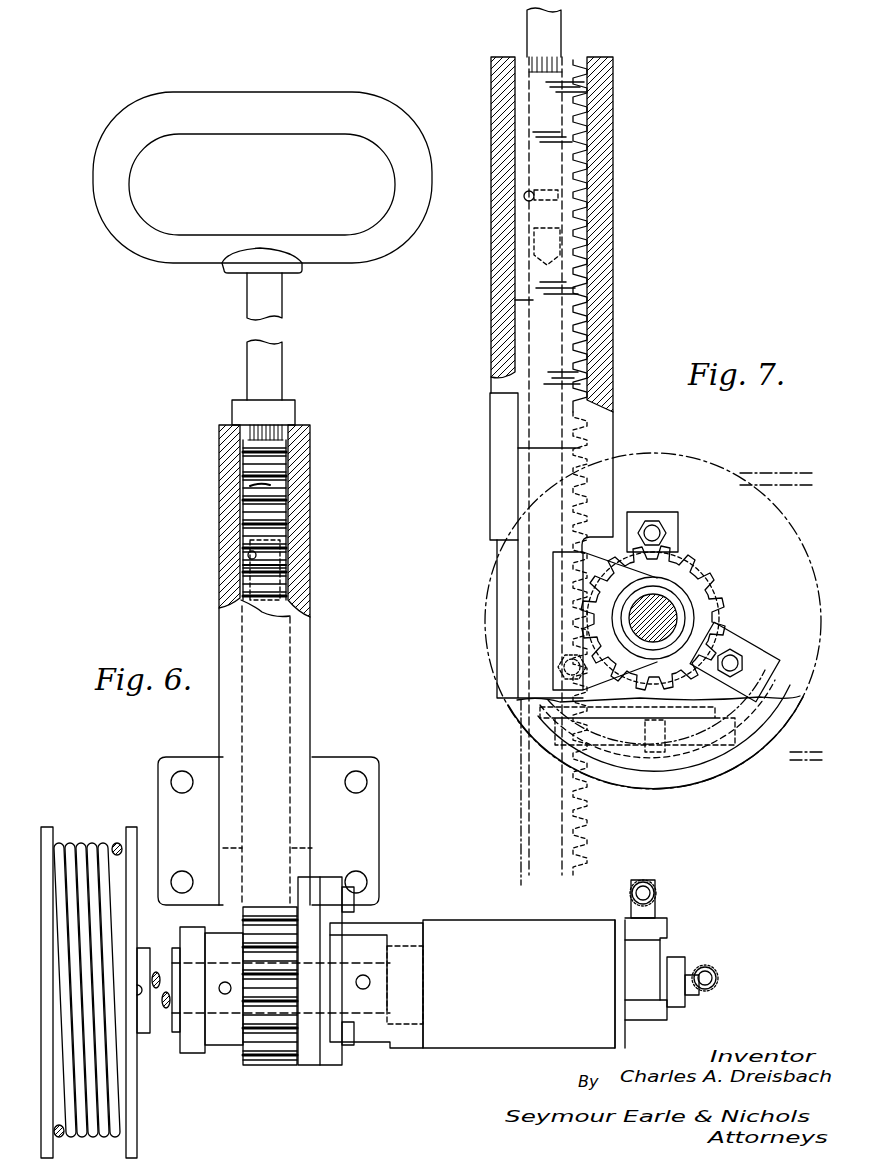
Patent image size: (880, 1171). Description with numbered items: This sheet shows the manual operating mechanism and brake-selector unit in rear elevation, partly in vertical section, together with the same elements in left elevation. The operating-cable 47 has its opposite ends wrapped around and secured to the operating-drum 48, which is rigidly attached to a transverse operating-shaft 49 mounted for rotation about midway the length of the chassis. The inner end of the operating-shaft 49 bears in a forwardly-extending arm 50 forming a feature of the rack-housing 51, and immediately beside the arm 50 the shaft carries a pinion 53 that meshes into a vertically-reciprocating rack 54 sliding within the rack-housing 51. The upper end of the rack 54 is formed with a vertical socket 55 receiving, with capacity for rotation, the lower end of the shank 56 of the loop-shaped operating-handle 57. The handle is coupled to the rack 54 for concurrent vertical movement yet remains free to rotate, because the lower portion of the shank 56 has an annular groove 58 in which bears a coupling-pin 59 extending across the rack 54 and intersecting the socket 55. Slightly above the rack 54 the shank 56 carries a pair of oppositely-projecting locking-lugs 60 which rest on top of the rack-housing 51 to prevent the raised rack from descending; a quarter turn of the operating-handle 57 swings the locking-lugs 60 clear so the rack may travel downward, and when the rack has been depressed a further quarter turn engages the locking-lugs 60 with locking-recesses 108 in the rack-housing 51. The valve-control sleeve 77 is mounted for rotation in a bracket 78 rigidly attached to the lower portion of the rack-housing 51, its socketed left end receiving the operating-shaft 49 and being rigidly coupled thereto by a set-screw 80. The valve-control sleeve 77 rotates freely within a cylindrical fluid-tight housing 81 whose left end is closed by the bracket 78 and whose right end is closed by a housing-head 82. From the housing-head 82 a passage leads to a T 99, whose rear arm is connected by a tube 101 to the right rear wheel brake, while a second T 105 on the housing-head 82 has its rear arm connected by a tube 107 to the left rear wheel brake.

In FIG. 6, the operating-cable 47 is at (90, 843).
In FIG. 7, the operating-cable 47 is at (790, 472).
In FIG. 6, the operating-drum 48 is at (46, 827).
In FIG. 7, the operating-drum 48 is at (698, 470).
In FIG. 6, the operating-shaft 49 is at (156, 1030).
In FIG. 7, the operating-shaft 49 is at (668, 588).
In FIG. 6, the forwardly-extending arm 50 is at (180, 935).
In FIG. 7, the forwardly-extending arm 50 is at (690, 600).
In FIG. 6, the rack-housing 51 is at (219, 450).
In FIG. 7, the rack-housing 51 is at (613, 95).
In FIG. 6, the pinion 53 is at (222, 1052).
In FIG. 7, the pinion 53 is at (700, 575).
In FIG. 6, the rack 54 is at (240, 580).
In FIG. 7, the rack 54 is at (533, 300).
In FIG. 6, the vertical socket 55 is at (288, 480).
In FIG. 7, the vertical socket 55 is at (540, 138).
In FIG. 6, the shank 56 is at (283, 322).
In FIG. 7, the shank 56 is at (565, 68).
In FIG. 6, the operating-handle 57 is at (349, 265).
In FIG. 6, the annular groove 58 is at (278, 545).
In FIG. 7, the annular groove 58 is at (556, 196).
In FIG. 6, the coupling-pin 59 is at (282, 560).
In FIG. 7, the coupling-pin 59 is at (533, 192).
In FIG. 6, the locking-lugs 60 is at (232, 408).
In FIG. 7, the locking-lugs 60 is at (535, 30).
In FIG. 6, the valve-control sleeve 77 is at (378, 935).
In FIG. 6, the bracket 78 is at (392, 1048).
In FIG. 7, the bracket 78 is at (712, 618).
In FIG. 6, the set-screw 80 is at (370, 980).
In FIG. 6, the cylindrical fluid-tight housing 81 is at (512, 918).
In FIG. 6, the housing-head 82 is at (625, 1025).
In FIG. 6, the T 99 is at (655, 896).
In FIG. 6, the tube 101 is at (650, 872).
In FIG. 6, the T 105 is at (698, 968).
In FIG. 6, the tube 107 is at (717, 978).
In FIG. 6, the locking-recesses 108 is at (242, 815).
In FIG. 7, the locking-recesses 108 is at (576, 448).